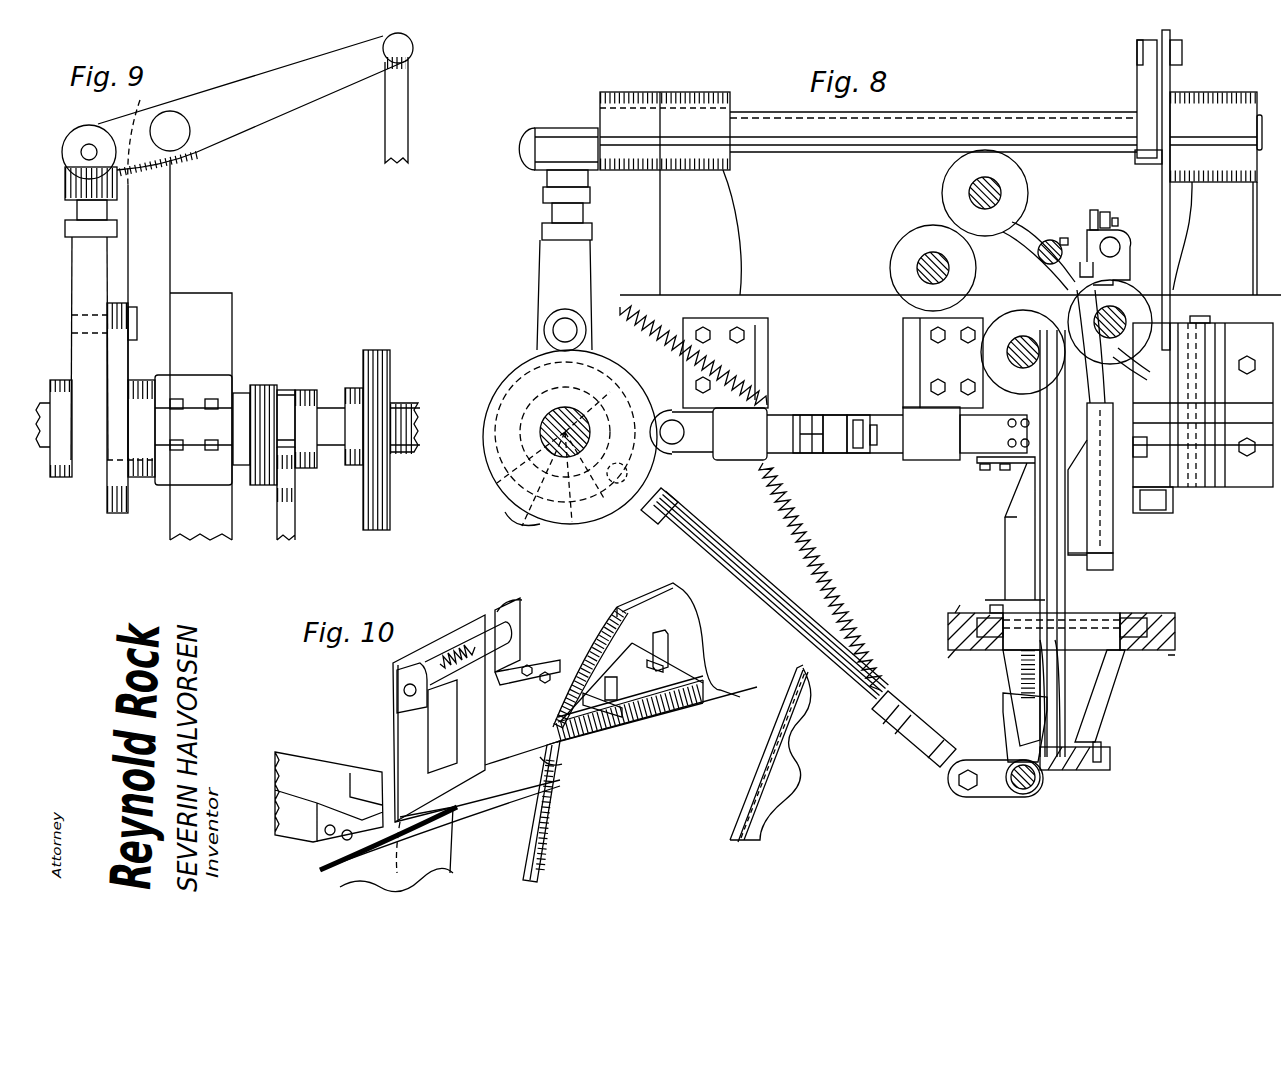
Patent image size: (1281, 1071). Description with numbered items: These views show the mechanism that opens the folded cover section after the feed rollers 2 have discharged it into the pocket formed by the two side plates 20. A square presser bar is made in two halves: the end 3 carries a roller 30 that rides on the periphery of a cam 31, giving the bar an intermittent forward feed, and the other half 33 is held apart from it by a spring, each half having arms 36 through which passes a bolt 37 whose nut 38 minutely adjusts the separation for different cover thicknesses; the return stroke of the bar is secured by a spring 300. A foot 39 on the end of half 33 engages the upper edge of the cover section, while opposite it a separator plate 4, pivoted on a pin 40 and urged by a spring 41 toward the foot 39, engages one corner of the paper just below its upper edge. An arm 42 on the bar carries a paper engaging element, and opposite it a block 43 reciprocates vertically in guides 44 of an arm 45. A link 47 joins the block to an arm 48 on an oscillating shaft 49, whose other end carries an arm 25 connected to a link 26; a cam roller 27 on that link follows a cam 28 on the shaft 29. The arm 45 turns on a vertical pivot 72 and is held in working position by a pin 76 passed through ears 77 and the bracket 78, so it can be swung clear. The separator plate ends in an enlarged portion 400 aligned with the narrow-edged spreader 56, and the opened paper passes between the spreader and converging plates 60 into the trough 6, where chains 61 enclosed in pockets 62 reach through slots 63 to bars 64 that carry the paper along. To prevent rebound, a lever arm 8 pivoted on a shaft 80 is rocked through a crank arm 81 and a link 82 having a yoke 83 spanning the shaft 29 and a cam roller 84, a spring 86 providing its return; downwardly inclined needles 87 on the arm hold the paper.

In FIG. 8, the feed rollers 2 is at (952, 204).
In FIG. 8, the presser bar end 3 is at (700, 450).
In FIG. 10, the separator plate 4 is at (460, 820).
In FIG. 10, the trough 6 is at (673, 603).
In FIG. 8, the lever arm 8 is at (1045, 705).
In FIG. 8, the side plates 20 is at (1077, 592).
In FIG. 9, the arm 25 is at (125, 130).
In FIG. 8, the arm 25 is at (607, 165).
In FIG. 9, the link 26 is at (95, 258).
In FIG. 8, the link 26 is at (572, 255).
In FIG. 9, the cam roller 27 is at (128, 316).
In FIG. 8, the cam roller 27 is at (578, 323).
In FIG. 9, the cam 28 is at (128, 370).
In FIG. 8, the cam 28 is at (652, 380).
In FIG. 9, the shaft 29 is at (405, 422).
In FIG. 8, the shaft 29 is at (542, 450).
In FIG. 8, the roller 30 is at (672, 452).
In FIG. 9, the cam 31 is at (385, 388).
In FIG. 8, the cam 31 is at (585, 523).
In FIG. 8, the presser bar half 33 is at (888, 447).
In FIG. 8, the arms 36 is at (780, 410).
In FIG. 8, the bolt 37 is at (802, 422).
In FIG. 8, the nut 38 is at (862, 420).
In FIG. 8, the foot 39 is at (1000, 434).
In FIG. 10, the foot 39 is at (370, 790).
In FIG. 8, the pin 40 is at (1108, 245).
In FIG. 10, the pin 40 is at (403, 692).
In FIG. 10, the spring 41 is at (467, 647).
In FIG. 8, the arm 42 is at (1008, 542).
In FIG. 8, the block 43 is at (1100, 553).
In FIG. 8, the guides 44 is at (1095, 520).
In FIG. 8, the arm 45 is at (1150, 433).
In FIG. 9, the link 47 is at (405, 143).
In FIG. 8, the link 47 is at (1167, 83).
In FIG. 9, the arm 48 is at (265, 108).
In FIG. 8, the arm 48 is at (1147, 72).
In FIG. 9, the shaft 49 is at (178, 140).
In FIG. 8, the shaft 49 is at (1110, 125).
In FIG. 10, the spreader 56 is at (617, 730).
In FIG. 10, the plates 60 is at (593, 653).
In FIG. 8, the paper carrying chain 61 is at (965, 642).
In FIG. 8, the pockets 62 is at (1150, 615).
In FIG. 8, the slot 63 is at (1122, 619).
In FIG. 8, the bars 64 is at (1093, 638).
In FIG. 8, the vertical pivot 72 is at (1160, 497).
In FIG. 8, the pin 76 is at (1207, 316).
In FIG. 8, the ears 77 is at (1197, 372).
In FIG. 8, the bracket 78 is at (1251, 406).
In FIG. 8, the shaft 80 is at (1020, 764).
In FIG. 8, the crank arm 81 is at (992, 790).
In FIG. 9, the link 82 is at (290, 528).
In FIG. 8, the link 82 is at (892, 748).
In FIG. 9, the yoke 83 is at (288, 468).
In FIG. 8, the yoke 83 is at (516, 530).
In FIG. 9, the cam roller 84 is at (265, 395).
In FIG. 8, the cam roller 84 is at (535, 456).
In FIG. 8, the spring 86 is at (822, 578).
In FIG. 8, the needles 87 is at (1053, 697).
In FIG. 8, the spring 300 is at (670, 325).
In FIG. 10, the enlarged end 400 is at (562, 758).